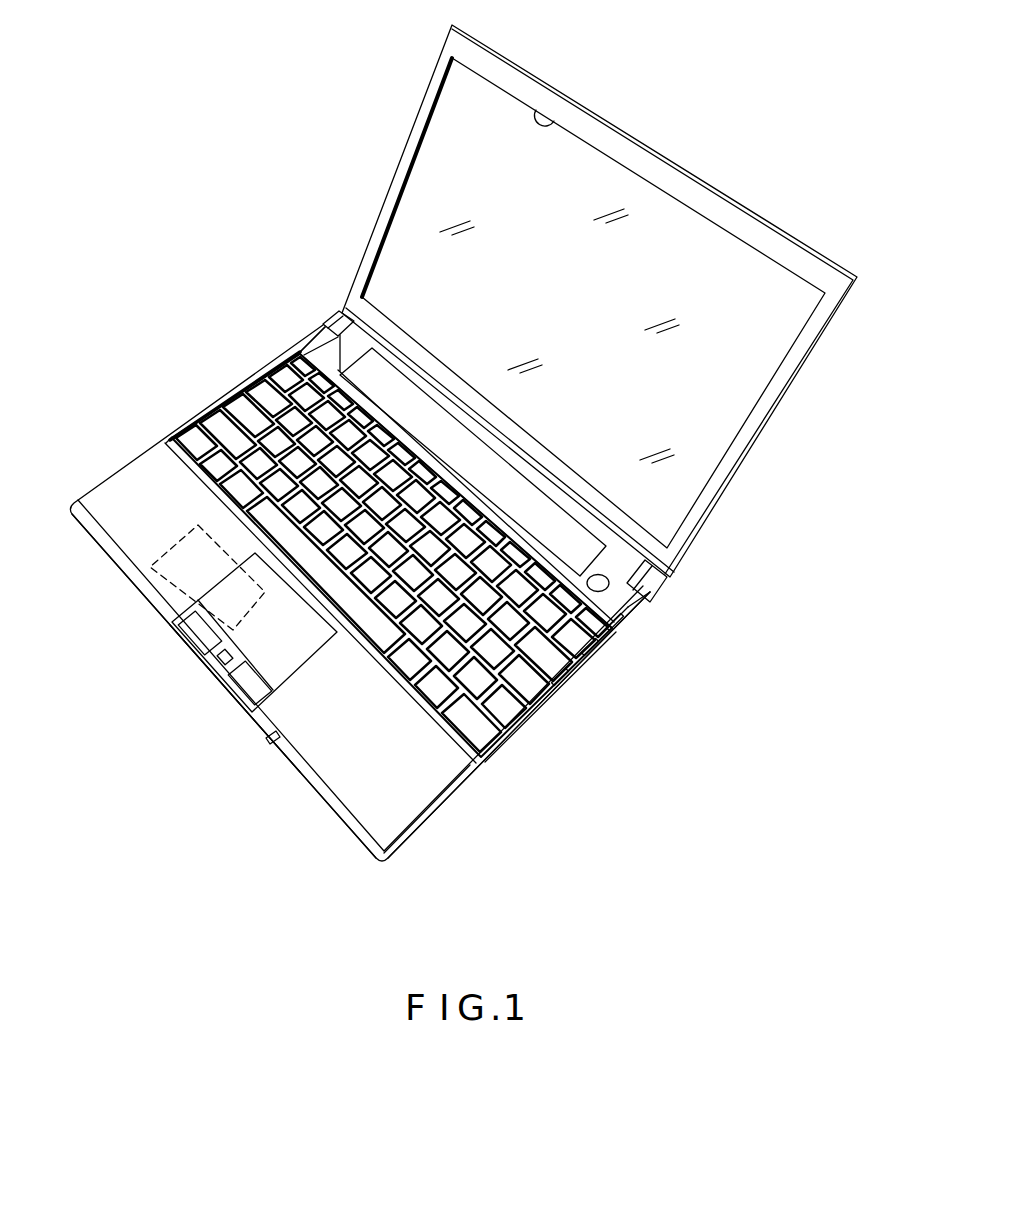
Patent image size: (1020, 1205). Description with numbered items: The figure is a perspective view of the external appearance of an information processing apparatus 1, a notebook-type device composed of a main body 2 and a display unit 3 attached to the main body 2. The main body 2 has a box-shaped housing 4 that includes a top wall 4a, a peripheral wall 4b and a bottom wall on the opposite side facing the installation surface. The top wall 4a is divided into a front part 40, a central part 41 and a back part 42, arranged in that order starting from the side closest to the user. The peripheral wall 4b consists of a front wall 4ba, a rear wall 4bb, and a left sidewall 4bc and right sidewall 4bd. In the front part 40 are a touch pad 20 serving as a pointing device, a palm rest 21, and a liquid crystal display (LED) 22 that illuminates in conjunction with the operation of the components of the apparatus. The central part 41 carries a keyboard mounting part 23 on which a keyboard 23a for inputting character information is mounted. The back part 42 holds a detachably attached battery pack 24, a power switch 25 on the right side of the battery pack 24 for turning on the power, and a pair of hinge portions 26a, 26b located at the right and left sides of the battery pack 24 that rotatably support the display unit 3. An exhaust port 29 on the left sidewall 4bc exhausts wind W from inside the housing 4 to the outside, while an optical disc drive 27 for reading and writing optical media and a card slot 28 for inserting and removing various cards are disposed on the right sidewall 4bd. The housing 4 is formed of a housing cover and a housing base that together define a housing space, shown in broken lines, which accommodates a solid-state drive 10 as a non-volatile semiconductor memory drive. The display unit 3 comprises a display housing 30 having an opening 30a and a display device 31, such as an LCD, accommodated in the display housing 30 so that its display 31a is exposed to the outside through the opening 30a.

The information processing apparatus 1 is at (210, 150).
The main body 2 is at (196, 393).
The display unit 3 is at (398, 152).
The housing 4 is at (126, 490).
The top wall 4a is at (342, 797).
The peripheral wall 4b is at (600, 656).
The front wall 4ba is at (292, 768).
The rear wall 4bb is at (654, 590).
The left sidewall 4bc is at (266, 353).
The right sidewall 4bd is at (630, 633).
The solid-state drive (SSD) 10 is at (150, 592).
The touch pad 20 is at (300, 655).
The palm rest 21 is at (152, 542).
The liquid crystal display (LED) 22 is at (267, 742).
The keyboard mounting part 23 is at (438, 472).
The keyboard 23a is at (408, 458).
The battery pack 24 is at (528, 497).
The power switch 25 is at (606, 589).
The hinge portion 26a is at (332, 316).
The hinge portion 26b is at (667, 580).
The optical disc drive (ODD) 27 is at (478, 766).
The card slot 28 is at (575, 678).
The exhaust port 29 is at (176, 429).
The display housing 30 is at (655, 172).
The opening 30a is at (546, 112).
The display device 31 is at (724, 256).
The display 31a is at (581, 310).
The front part 40 is at (168, 606).
The central part 41 is at (228, 385).
The back part 42 is at (300, 347).
The wind W is at (187, 417).